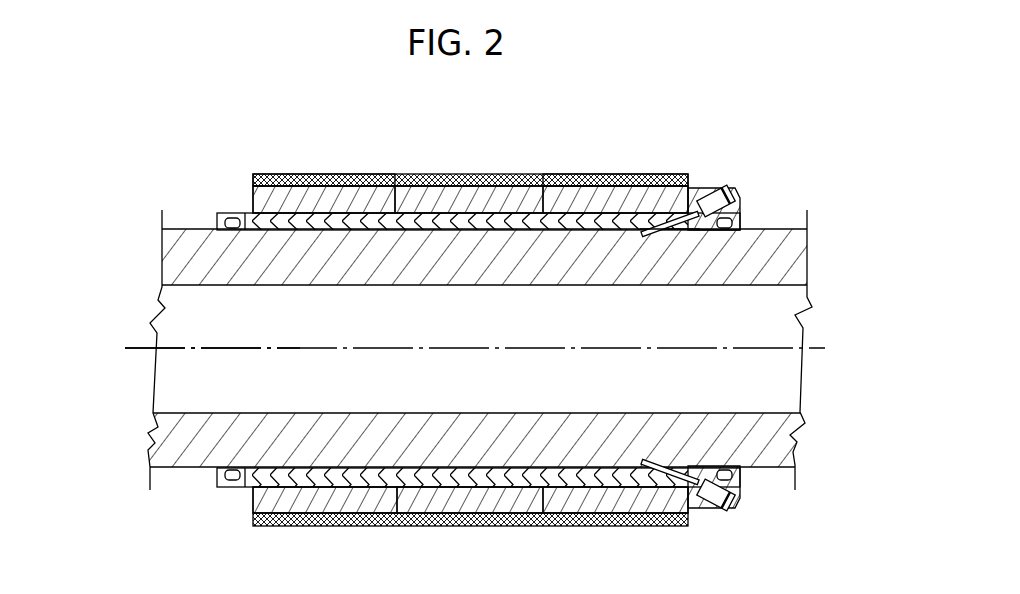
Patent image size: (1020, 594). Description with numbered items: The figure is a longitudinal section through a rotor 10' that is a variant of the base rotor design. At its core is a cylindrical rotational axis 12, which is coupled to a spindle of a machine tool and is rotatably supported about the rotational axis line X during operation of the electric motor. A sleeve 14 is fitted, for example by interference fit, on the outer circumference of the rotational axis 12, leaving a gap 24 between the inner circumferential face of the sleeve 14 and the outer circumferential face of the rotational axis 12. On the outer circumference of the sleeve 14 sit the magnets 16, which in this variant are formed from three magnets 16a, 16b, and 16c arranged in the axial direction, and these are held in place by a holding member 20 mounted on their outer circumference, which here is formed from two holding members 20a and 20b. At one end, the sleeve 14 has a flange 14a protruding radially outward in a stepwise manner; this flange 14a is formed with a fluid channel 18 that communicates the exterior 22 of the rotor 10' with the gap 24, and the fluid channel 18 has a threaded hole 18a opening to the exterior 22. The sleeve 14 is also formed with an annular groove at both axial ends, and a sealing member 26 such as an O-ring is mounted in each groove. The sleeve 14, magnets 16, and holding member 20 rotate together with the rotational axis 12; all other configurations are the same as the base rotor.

The rotor 10' is at (451, 235).
The rotational axis line X is at (135, 348).
The rotational axis 12 is at (786, 229).
The sleeve 14 is at (484, 213).
The flange 14a is at (707, 190).
The magnets 16 is at (245, 190).
The magnet 16a is at (367, 195).
The magnet 16b is at (429, 200).
The magnet 16c is at (620, 196).
The fluid channel 18 is at (701, 182).
The threaded hole 18a is at (722, 190).
The holding member 20 is at (513, 152).
The holding member 20a is at (333, 175).
The holding member 20b is at (562, 175).
The exterior 22 is at (818, 103).
The gap 24 is at (650, 240).
The sealing member 26 is at (228, 218).